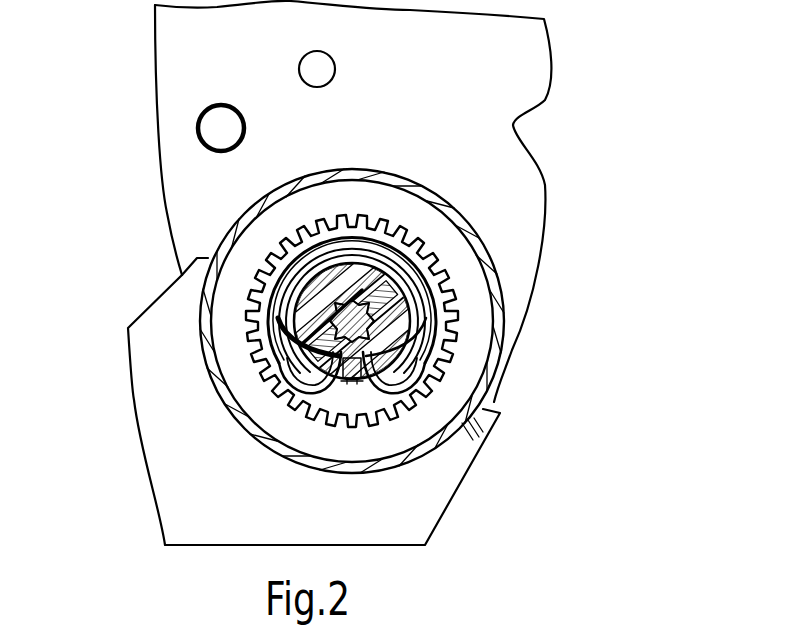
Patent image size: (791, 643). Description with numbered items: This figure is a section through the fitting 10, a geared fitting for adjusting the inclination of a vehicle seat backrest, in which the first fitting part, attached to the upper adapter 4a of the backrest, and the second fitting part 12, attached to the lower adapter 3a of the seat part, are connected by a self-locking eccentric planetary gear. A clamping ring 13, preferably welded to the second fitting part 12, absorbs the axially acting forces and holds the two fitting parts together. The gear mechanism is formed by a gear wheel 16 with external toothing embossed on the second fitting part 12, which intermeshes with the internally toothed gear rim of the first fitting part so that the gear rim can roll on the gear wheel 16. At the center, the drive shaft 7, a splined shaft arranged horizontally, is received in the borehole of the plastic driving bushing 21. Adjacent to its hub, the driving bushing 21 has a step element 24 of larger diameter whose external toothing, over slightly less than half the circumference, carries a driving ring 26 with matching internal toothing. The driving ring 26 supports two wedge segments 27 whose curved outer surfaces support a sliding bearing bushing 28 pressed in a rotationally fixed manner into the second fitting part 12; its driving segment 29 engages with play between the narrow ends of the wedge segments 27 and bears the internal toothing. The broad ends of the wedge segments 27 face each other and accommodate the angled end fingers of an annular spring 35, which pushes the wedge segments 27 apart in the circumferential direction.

The upper adapter 4a is at (520, 67).
The lower adapter 3a is at (418, 492).
The clamping ring 13 is at (500, 288).
The second fitting part 12 is at (473, 347).
The fitting 10 is at (497, 390).
The driving bushing 21 is at (255, 300).
The driving segment 29 is at (348, 262).
The driving ring 26 is at (283, 268).
The drive shaft 7 is at (300, 333).
The gear wheel 16 is at (288, 360).
The step element 24 is at (415, 315).
The wedge segments 27 is at (317, 355).
The sliding bearing bushing 28 is at (300, 385).
The annular spring 35 is at (330, 398).